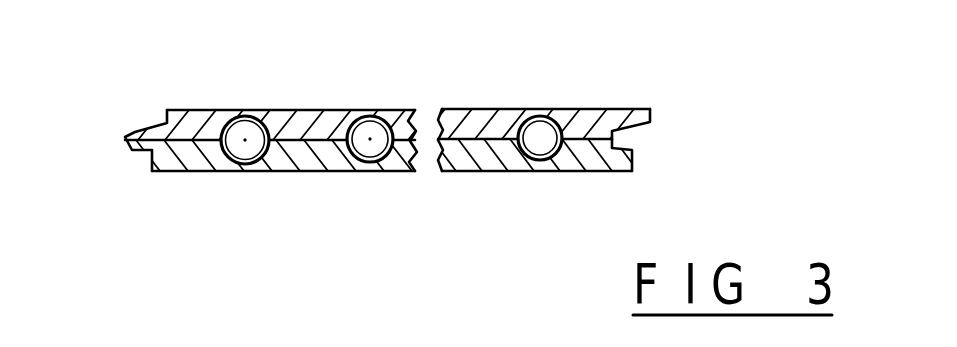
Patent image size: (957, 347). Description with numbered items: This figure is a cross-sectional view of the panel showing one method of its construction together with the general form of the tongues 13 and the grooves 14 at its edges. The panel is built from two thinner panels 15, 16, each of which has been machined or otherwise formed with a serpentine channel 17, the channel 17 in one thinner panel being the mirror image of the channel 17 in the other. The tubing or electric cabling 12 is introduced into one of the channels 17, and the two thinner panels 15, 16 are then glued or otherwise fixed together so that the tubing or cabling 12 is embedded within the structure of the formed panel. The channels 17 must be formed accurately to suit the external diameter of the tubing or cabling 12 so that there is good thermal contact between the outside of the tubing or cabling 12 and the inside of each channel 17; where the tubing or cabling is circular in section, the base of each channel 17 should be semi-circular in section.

The tubing or electric cabling 12 is at (550, 157).
The tongue 13 is at (130, 137).
The groove 14 is at (633, 138).
The thinner panel 15 is at (303, 156).
The thinner panel 16 is at (311, 122).
The serpentine channel 17 is at (387, 160).